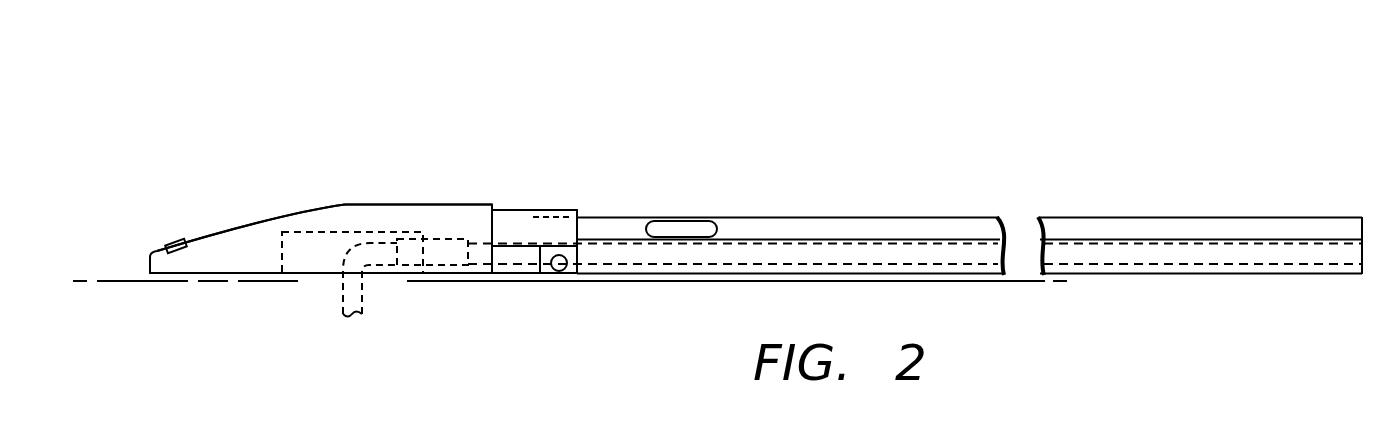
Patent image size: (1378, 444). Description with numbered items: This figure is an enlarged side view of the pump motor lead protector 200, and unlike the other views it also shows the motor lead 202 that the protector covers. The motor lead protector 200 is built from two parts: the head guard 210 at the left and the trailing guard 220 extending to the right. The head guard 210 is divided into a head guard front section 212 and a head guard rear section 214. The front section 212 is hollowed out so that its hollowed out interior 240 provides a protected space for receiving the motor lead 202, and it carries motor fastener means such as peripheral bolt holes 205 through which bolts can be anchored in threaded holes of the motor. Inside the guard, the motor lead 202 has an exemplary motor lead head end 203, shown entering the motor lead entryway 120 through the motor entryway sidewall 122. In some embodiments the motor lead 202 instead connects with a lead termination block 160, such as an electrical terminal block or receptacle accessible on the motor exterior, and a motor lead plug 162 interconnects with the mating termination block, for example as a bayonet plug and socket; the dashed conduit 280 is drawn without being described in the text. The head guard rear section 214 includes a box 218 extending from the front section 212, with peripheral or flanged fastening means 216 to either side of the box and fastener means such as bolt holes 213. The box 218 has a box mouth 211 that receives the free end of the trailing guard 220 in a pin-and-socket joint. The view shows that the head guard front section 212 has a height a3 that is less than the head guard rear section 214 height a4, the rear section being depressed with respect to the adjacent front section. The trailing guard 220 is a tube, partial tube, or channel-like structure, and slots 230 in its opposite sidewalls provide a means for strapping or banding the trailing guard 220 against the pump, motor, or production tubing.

The motor lead protector 200 is at (1093, 107).
The head guard 210 is at (318, 192).
The head guard front section 212 is at (398, 213).
The peripheral bolt holes 205 is at (237, 222).
The motor lead head end 203 is at (175, 240).
The motor entryway sidewall 122 is at (116, 281).
The hollowed out interior 240 is at (303, 255).
The lead termination block 160 is at (358, 232).
The motor lead plug 162 is at (453, 240).
The conduit 280 is at (343, 297).
The motor lead entryway 120 is at (403, 281).
The box 218 is at (523, 210).
The box mouth 211 is at (580, 227).
The bolt holes 213 is at (567, 255).
The flanged fastening means 216 is at (512, 267).
The head guard rear section 214 is at (548, 275).
The head guard front section height a3 is at (487, 322).
The head guard rear section height a4 is at (570, 334).
The trailing guard 220 is at (857, 205).
The motor lead 202 is at (965, 247).
The slots 230 is at (695, 227).